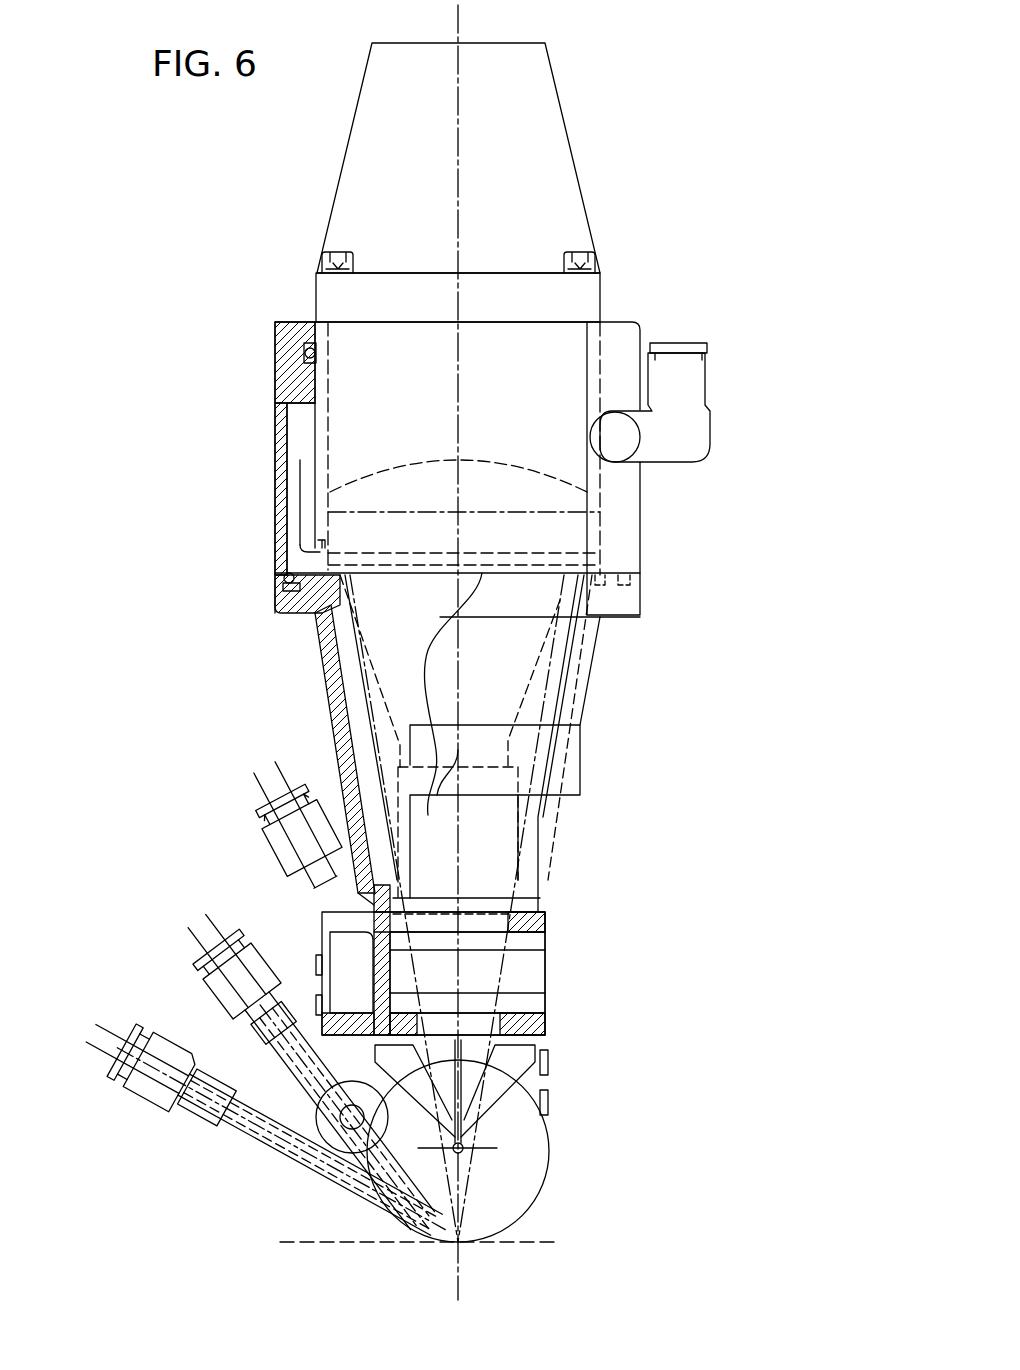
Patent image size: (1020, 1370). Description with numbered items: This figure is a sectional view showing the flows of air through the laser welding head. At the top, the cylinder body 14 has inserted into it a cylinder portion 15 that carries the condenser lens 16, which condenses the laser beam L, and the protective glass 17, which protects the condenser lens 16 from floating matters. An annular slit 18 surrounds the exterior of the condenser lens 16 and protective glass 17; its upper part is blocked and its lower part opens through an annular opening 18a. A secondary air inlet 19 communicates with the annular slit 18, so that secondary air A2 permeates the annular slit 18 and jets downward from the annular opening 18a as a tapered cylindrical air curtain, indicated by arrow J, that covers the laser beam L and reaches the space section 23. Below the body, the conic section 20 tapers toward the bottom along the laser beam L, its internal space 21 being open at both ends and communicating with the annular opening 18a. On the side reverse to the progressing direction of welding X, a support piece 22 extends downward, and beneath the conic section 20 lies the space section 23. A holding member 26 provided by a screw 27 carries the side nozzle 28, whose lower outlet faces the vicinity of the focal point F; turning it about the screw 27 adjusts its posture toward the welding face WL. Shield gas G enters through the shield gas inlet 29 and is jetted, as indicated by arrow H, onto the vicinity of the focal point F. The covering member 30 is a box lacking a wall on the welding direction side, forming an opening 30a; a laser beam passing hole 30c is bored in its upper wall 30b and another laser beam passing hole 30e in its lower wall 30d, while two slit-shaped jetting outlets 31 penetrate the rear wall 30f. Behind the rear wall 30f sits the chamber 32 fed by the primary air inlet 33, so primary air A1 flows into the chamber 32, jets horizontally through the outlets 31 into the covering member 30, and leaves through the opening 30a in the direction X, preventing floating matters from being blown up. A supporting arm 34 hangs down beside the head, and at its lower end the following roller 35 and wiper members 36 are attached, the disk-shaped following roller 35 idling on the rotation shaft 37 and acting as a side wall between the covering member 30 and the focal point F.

The cylinder body 14 is at (285, 437).
The cylinder portion 15 is at (318, 398).
The condenser lens 16 is at (575, 490).
The protective glass 17 is at (555, 548).
The annular slit 18 is at (298, 482).
The annular opening 18a is at (305, 575).
The secondary air inlet 19 is at (680, 380).
The conic section 20 is at (325, 628).
The internal space 21 is at (300, 588).
The support piece 22 is at (345, 800).
The space section 23 is at (485, 805).
The holding member 26 is at (300, 1085).
The screw 27 is at (350, 1125).
The side nozzle 28 is at (232, 1115).
The shield gas inlet 29 is at (185, 1035).
The covering member 30 is at (545, 1043).
The opening 30a is at (535, 970).
The upper wall 30b is at (535, 918).
The laser beam passing hole 30c is at (490, 912).
The lower wall 30d is at (535, 1015).
The laser beam passing hole 30e is at (510, 1080).
The rear wall 30f is at (430, 912).
The slit-shaped jetting outlets 31 is at (390, 965).
The chamber 32 is at (345, 960).
The primary air inlet 33 is at (262, 845).
The supporting arm 34 is at (530, 700).
The following roller 35 is at (518, 1163).
The wiper members 36 is at (520, 1110).
The rotation shaft 37 is at (530, 1195).
The primary air A1 is at (262, 770).
The secondary air A2 is at (305, 505).
The shield gas G is at (190, 922).
The arrow J is at (340, 703).
The laser beam L is at (335, 665).
The welding face WL is at (335, 1245).
The arrow H is at (452, 1244).
The focal point F is at (464, 1244).
The progressing direction of welding X is at (605, 1230).